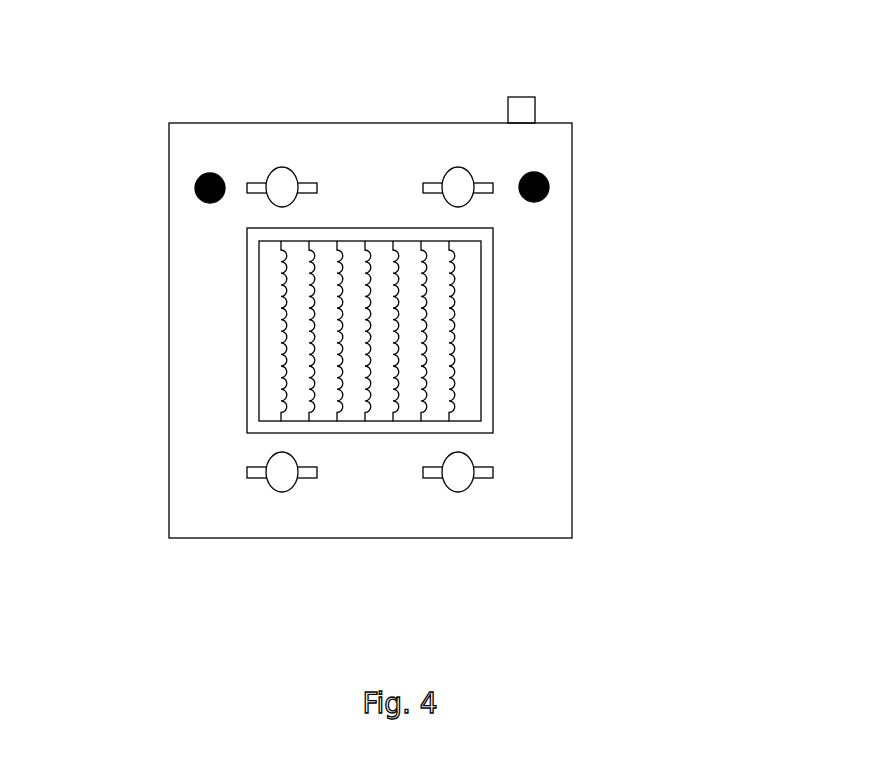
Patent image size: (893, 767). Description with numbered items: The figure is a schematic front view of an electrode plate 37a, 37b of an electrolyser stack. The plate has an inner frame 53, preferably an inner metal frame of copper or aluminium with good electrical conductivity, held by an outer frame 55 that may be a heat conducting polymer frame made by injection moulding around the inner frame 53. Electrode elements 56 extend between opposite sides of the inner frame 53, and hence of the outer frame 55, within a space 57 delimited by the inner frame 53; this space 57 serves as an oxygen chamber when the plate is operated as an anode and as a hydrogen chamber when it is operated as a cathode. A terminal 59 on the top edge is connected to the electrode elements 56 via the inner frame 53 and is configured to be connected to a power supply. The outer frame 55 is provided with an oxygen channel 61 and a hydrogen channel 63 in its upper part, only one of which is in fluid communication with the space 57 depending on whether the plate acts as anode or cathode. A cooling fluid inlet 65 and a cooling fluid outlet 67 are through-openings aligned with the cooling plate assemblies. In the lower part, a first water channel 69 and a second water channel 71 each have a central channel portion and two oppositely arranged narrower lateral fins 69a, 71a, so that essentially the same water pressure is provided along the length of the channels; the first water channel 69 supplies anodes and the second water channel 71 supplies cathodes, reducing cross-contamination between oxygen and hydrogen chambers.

The electrode plate 37a is at (401, 329).
The electrode plate 37b is at (644, 210).
The inner frame 53 is at (247, 387).
The outer frame 55 is at (169, 312).
The electrode elements 56 is at (457, 395).
The space 57 is at (476, 338).
The terminal 59 is at (522, 97).
The oxygen channel 61 is at (284, 182).
The hydrogen channel 63 is at (460, 182).
The cooling fluid inlet 65 is at (197, 185).
The cooling fluid outlet 67 is at (547, 178).
The first water channel 69 is at (281, 488).
The lateral fins 69a is at (255, 478).
The second water channel 71 is at (457, 488).
The lateral fins 71a is at (431, 478).